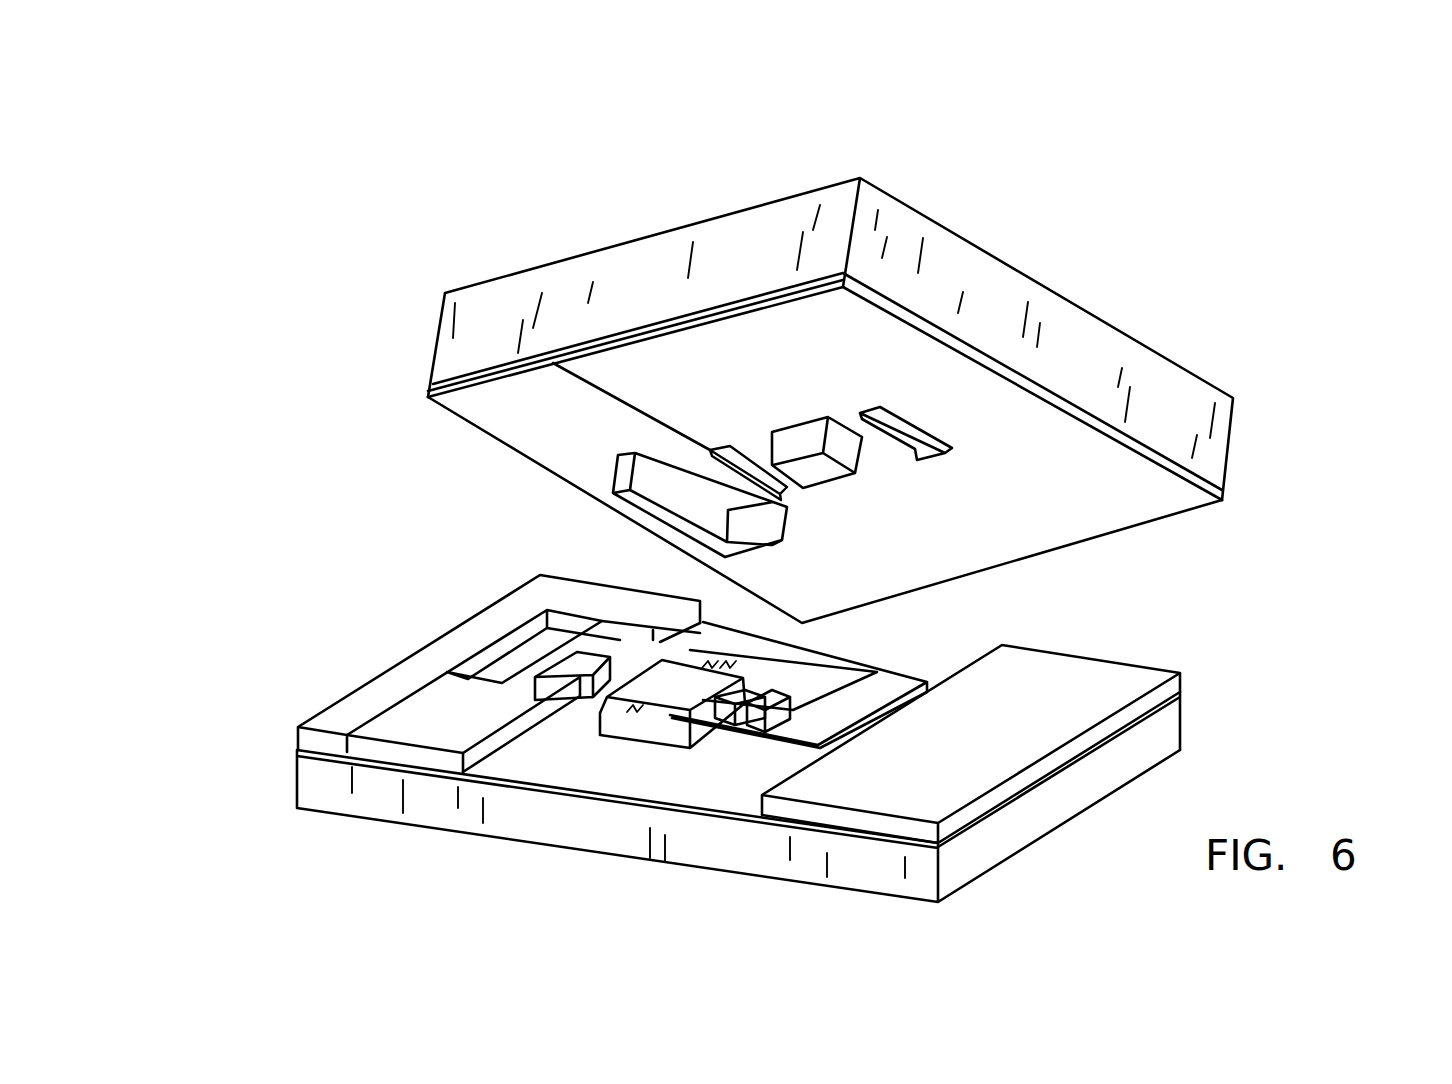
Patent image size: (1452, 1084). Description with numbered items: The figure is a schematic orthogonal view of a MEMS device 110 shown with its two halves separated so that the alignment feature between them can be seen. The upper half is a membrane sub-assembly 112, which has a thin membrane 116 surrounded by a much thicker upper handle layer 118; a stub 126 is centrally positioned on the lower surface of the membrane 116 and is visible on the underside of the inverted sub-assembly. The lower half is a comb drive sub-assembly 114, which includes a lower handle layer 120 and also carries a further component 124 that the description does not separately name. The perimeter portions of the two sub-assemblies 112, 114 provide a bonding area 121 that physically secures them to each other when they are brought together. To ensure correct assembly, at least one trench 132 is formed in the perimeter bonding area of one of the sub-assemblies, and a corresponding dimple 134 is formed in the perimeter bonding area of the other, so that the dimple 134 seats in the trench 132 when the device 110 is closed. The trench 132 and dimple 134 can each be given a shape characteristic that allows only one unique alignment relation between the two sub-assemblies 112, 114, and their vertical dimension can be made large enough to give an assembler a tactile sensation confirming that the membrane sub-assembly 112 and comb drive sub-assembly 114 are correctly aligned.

The MEMS device 110 is at (1188, 248).
The membrane sub-assembly 112 is at (1257, 402).
The comb drive sub-assembly 114 is at (1208, 717).
The membrane 116 is at (902, 427).
The upper handle layer 118 is at (517, 312).
The lower handle layer 120 is at (372, 813).
The bonding area 121 is at (1093, 680).
The chip 124 is at (672, 698).
The stub 126 is at (805, 443).
The trench 132 is at (423, 663).
The dimple 134 is at (683, 528).